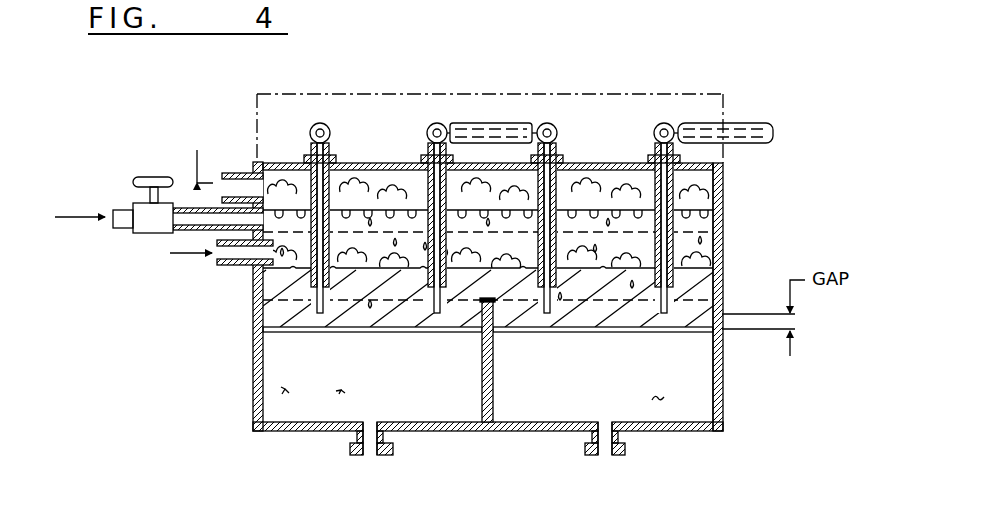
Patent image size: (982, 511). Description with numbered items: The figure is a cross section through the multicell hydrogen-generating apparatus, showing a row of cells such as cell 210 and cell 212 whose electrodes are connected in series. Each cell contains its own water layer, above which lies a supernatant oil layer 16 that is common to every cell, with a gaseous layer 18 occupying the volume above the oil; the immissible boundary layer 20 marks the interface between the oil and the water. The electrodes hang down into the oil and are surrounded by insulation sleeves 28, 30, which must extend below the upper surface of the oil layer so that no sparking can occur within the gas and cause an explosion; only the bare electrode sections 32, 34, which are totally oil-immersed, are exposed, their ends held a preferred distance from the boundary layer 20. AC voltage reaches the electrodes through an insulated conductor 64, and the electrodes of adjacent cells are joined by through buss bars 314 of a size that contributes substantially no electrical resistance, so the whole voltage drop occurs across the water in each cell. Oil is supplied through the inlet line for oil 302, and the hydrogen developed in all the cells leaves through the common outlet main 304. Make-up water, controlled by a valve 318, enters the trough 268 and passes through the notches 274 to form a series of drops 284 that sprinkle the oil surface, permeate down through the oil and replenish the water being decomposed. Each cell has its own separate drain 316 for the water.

The oil layer 16 is at (290, 300).
The gaseous layer 18 is at (604, 192).
The immissible boundary layer 20 is at (640, 333).
The insulation sleeve 28 is at (260, 165).
The insulation sleeve 30 is at (430, 195).
The bare electrode section 32 is at (390, 313).
The bare electrode section 34 is at (712, 332).
The insulated conductor 64 is at (744, 126).
The cell 210 is at (283, 388).
The cell 212 is at (683, 433).
The trough 268 is at (703, 228).
The notches 274 is at (716, 193).
The drops 284 is at (262, 426).
The inlet line for oil 302 is at (245, 266).
The common outlet main 304 is at (232, 172).
The through buss bars 314 is at (490, 123).
The drain 316 is at (368, 455).
The valve 318 is at (152, 177).